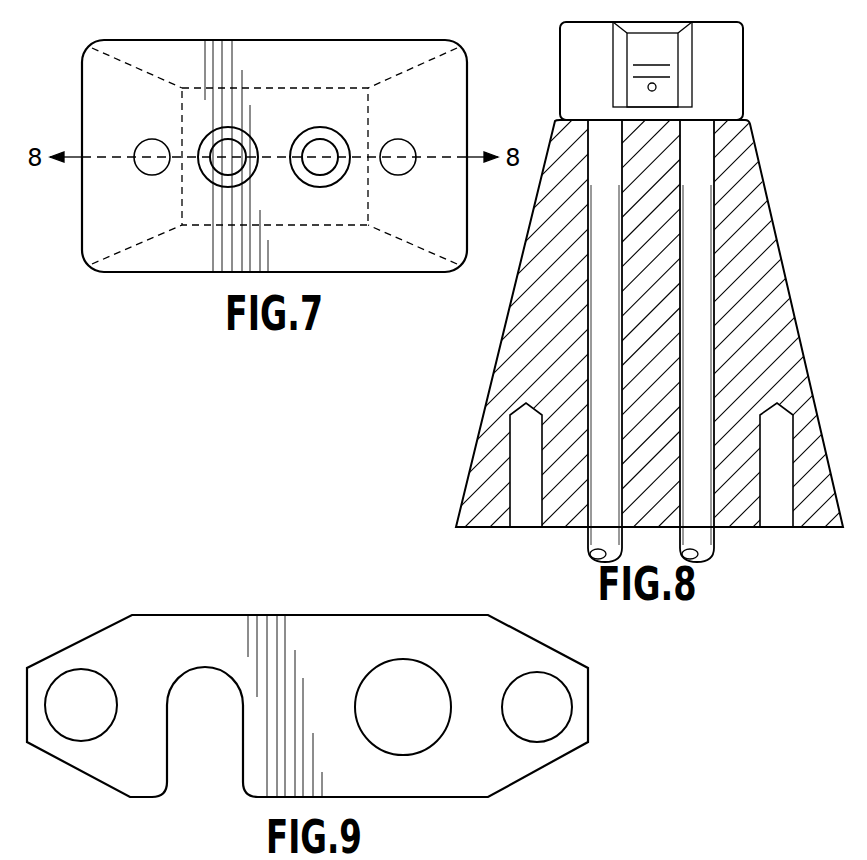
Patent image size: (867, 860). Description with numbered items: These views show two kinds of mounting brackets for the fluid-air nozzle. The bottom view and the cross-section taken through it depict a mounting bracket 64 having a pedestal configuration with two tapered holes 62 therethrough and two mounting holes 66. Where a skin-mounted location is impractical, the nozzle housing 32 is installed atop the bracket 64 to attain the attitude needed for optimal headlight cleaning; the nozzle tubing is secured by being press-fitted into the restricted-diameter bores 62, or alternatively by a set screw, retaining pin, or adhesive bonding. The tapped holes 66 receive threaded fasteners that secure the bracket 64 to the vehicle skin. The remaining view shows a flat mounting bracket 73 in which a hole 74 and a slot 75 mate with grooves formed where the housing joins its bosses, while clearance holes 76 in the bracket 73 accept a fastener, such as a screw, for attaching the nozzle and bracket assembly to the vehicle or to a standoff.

In FIG. 8, the nozzle housing 32 is at (743, 57).
In FIG. 7, the tapered holes 62 is at (320, 131).
In FIG. 8, the tapered holes 62 is at (717, 524).
In FIG. 7, the mounting bracket 64 is at (467, 93).
In FIG. 8, the mounting bracket 64 is at (780, 245).
In FIG. 7, the mounting holes 66 is at (398, 140).
In FIG. 8, the mounting holes 66 is at (528, 518).
In FIG. 9, the mounting bracket 73 is at (540, 768).
In FIG. 9, the hole 74 is at (437, 692).
In FIG. 9, the slot 75 is at (210, 682).
In FIG. 9, the holes 76 is at (78, 685).